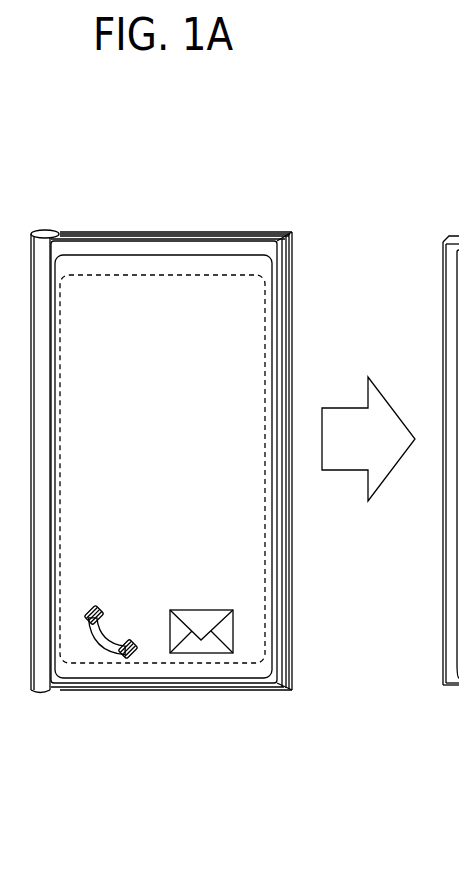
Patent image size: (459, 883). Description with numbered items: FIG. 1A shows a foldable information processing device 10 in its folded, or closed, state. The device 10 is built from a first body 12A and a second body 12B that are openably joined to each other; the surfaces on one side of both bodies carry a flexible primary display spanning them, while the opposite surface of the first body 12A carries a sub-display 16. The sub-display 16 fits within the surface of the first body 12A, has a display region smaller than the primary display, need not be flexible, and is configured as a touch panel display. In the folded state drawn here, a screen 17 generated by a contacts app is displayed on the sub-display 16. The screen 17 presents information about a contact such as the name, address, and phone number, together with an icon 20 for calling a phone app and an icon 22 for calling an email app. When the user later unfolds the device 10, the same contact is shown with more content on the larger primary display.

The information processing device 10 is at (201, 214).
The first body 12A is at (290, 233).
The second body 12B is at (266, 231).
The sub-display 16 is at (159, 263).
The screen 17 is at (262, 345).
The icon 20 is at (105, 643).
The icon 22 is at (233, 632).